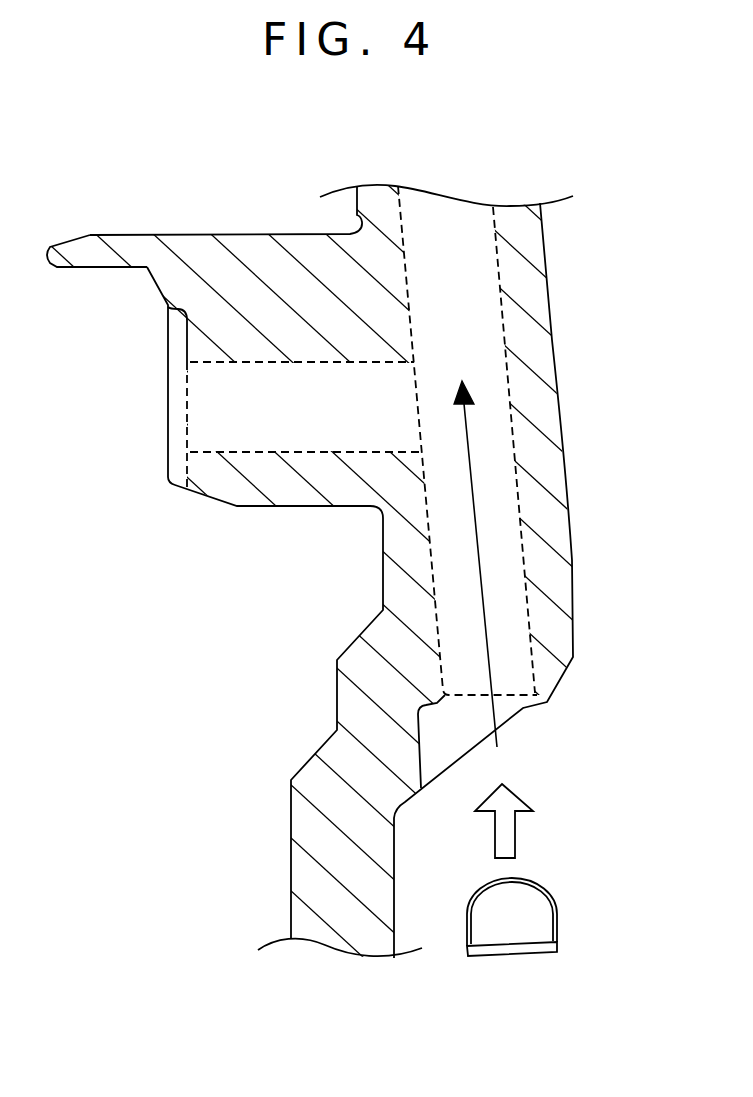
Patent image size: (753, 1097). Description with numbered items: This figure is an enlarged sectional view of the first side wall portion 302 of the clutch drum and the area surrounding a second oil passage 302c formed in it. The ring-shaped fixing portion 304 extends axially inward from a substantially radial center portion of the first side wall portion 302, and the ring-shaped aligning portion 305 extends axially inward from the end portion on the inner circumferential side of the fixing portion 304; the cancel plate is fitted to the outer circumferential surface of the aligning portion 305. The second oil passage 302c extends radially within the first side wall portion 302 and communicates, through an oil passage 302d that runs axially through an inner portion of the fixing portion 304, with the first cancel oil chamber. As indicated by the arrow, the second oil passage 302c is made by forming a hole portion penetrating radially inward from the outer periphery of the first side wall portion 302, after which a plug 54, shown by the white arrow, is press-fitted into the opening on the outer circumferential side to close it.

The first side wall portion 302 is at (553, 590).
The second oil passage 302c is at (497, 237).
The oil passage 302d is at (227, 362).
The fixing portion 304 is at (257, 257).
The aligning portion 305 is at (107, 257).
The plug 54 is at (567, 923).